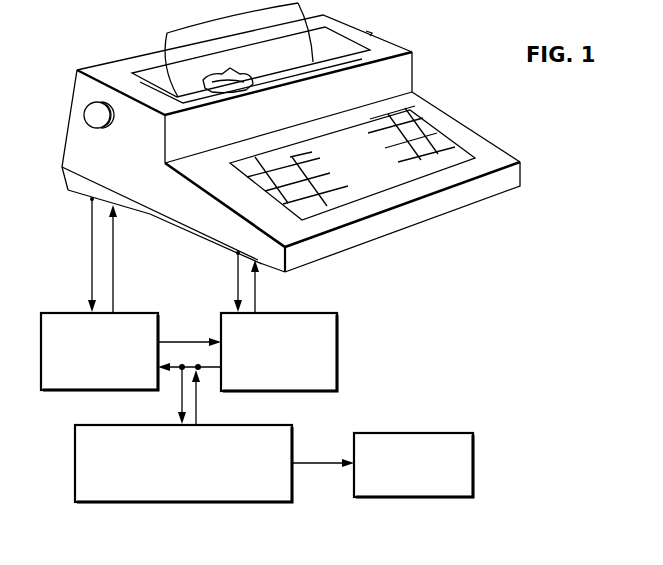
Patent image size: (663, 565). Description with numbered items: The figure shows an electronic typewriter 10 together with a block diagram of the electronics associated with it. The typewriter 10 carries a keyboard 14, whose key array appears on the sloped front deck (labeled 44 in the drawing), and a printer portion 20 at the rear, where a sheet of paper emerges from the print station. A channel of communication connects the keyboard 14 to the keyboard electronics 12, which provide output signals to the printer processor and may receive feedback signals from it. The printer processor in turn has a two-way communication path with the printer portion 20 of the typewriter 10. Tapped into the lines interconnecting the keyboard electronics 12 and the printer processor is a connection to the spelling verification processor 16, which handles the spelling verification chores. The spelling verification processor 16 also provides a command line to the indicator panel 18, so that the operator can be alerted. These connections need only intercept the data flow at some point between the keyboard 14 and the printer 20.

The electronic typewriter 10 is at (407, 79).
The keyboard electronics 12 is at (331, 359).
The keyboard 14 is at (142, 320).
The spelling verification processor 16 is at (110, 497).
The indicator panel 18 is at (468, 453).
The printer portion 20 is at (207, 30).
The keyboard 44 is at (423, 135).